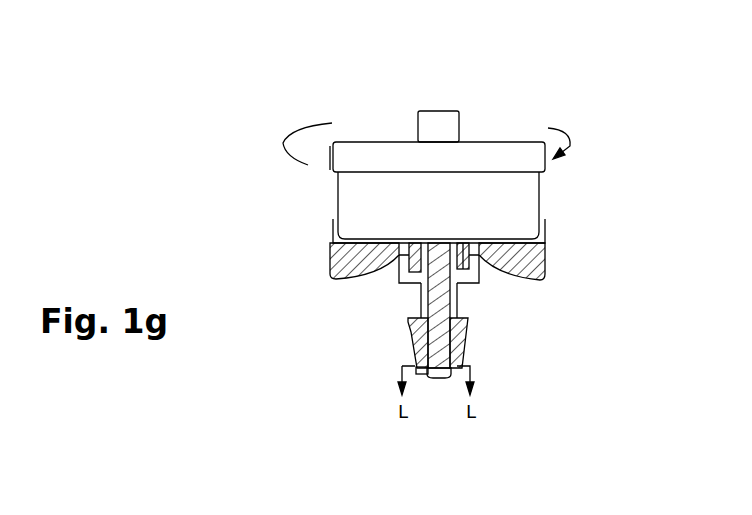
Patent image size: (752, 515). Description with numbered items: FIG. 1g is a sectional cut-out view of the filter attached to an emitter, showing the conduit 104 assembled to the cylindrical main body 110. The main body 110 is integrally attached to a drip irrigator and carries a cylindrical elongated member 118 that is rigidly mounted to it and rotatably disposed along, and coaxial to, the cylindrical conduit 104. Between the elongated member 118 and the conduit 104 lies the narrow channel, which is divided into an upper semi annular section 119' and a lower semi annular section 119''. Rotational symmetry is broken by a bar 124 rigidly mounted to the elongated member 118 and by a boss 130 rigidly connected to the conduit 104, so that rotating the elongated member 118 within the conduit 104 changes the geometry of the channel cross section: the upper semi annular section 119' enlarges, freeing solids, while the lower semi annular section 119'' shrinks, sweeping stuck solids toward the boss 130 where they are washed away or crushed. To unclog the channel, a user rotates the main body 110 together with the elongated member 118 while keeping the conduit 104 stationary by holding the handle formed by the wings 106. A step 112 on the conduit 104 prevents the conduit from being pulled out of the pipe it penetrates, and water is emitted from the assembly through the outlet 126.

The outlet 126 is at (437, 110).
The main body 110 is at (337, 189).
The wings 106 is at (508, 268).
The upper semi annular section 119' is at (369, 278).
The lower semi annular section 119'' is at (504, 281).
The step 112 is at (465, 318).
The conduit 104 is at (410, 327).
The elongated member 118 is at (453, 352).
The bar 124 is at (418, 357).
The boss 130 is at (432, 372).